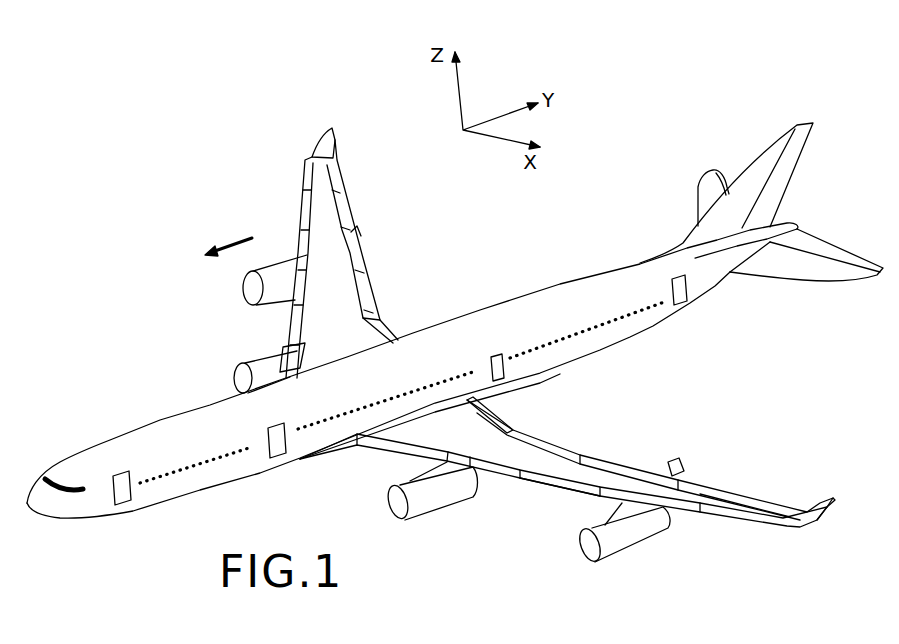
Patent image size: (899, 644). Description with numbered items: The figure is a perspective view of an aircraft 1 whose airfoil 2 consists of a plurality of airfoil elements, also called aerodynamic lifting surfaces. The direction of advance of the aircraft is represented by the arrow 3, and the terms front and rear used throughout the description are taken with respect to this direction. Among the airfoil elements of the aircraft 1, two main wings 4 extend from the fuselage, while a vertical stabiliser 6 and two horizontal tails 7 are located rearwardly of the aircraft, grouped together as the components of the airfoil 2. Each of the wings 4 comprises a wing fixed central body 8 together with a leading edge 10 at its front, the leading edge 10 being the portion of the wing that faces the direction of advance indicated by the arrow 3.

The aircraft 1 is at (455, 310).
The airfoil 2 is at (581, 364).
The arrow 3 is at (232, 240).
The main wing 4 is at (569, 366).
The vertical stabiliser 6 is at (714, 243).
The horizontal tail 7 is at (683, 207).
The wing fixed central body 8 is at (757, 497).
The leading edge 10 is at (555, 480).